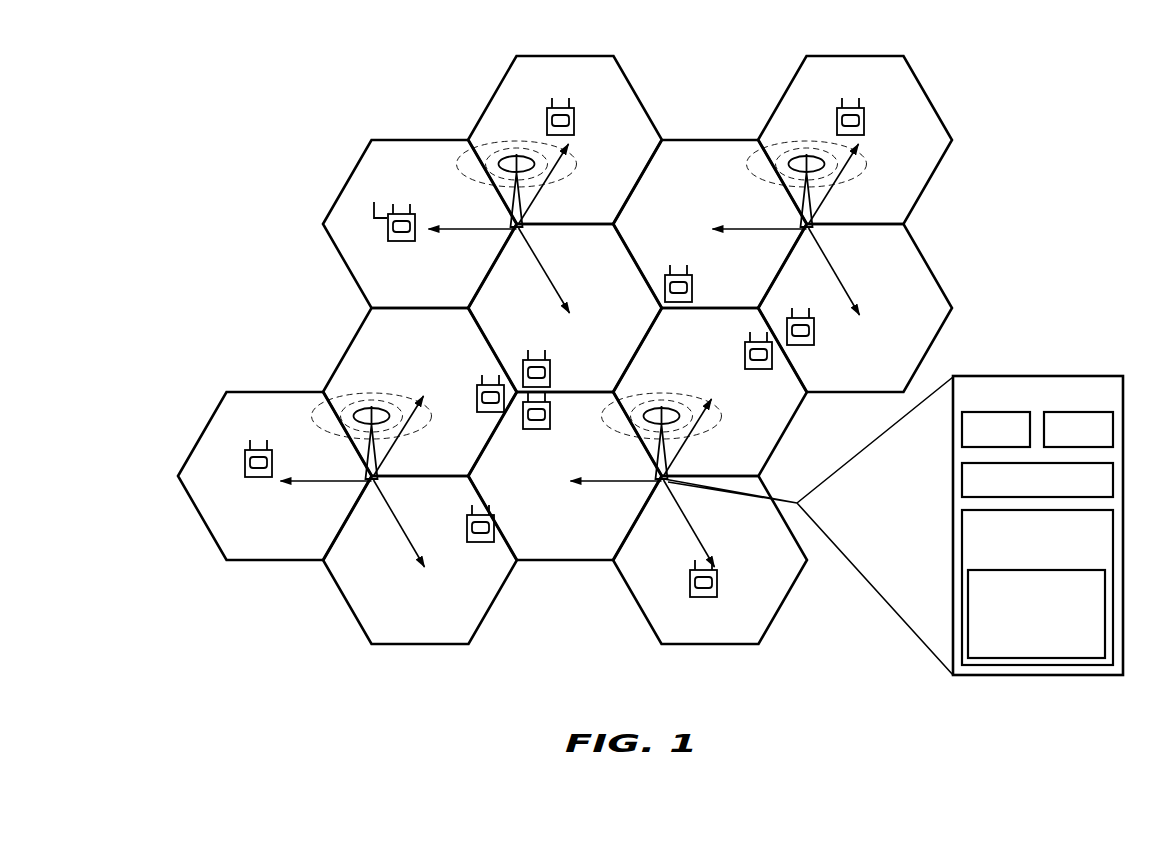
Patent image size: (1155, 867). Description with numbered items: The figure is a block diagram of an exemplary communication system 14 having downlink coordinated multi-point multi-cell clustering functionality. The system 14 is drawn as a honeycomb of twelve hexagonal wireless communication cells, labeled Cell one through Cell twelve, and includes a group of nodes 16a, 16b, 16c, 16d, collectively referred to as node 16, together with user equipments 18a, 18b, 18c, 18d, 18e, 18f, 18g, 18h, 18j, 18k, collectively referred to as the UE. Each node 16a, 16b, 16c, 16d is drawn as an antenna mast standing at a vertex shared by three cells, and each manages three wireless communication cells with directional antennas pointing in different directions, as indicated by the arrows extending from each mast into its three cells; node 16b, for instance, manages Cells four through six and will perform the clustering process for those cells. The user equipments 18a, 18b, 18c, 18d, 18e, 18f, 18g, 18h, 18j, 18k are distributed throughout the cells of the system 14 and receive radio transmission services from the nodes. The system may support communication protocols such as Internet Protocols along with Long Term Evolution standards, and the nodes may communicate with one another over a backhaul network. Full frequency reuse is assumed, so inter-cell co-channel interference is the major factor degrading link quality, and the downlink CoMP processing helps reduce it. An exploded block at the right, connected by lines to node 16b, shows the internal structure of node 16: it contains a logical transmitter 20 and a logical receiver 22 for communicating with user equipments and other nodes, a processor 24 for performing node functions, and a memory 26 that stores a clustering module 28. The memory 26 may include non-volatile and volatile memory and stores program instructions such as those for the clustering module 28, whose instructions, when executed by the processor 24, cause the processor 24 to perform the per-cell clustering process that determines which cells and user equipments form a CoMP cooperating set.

The communication system 14 is at (410, 93).
The node 16 is at (1112, 406).
The node 16a is at (364, 475).
The node 16b is at (670, 477).
The node 16c is at (509, 222).
The node 16d is at (812, 221).
The user equipment 18a is at (237, 458).
The user equipment 18b is at (459, 523).
The user equipment 18c is at (469, 393).
The user equipment 18d is at (539, 355).
The user equipment 18e is at (715, 273).
The user equipment 18f is at (722, 579).
The user equipment 18g is at (736, 350).
The user equipment 18h is at (820, 327).
The user equipment 18j is at (699, 283).
The user equipment 18k is at (581, 117).
The transmitter 20 is at (1022, 441).
The receiver 22 is at (1106, 441).
The processor 24 is at (1107, 491).
The memory 26 is at (1049, 566).
The clustering module 28 is at (1049, 654).